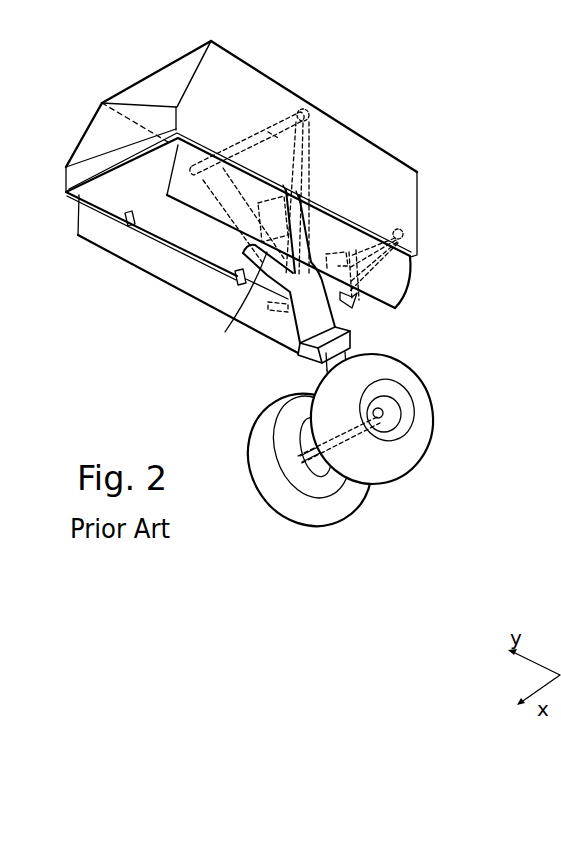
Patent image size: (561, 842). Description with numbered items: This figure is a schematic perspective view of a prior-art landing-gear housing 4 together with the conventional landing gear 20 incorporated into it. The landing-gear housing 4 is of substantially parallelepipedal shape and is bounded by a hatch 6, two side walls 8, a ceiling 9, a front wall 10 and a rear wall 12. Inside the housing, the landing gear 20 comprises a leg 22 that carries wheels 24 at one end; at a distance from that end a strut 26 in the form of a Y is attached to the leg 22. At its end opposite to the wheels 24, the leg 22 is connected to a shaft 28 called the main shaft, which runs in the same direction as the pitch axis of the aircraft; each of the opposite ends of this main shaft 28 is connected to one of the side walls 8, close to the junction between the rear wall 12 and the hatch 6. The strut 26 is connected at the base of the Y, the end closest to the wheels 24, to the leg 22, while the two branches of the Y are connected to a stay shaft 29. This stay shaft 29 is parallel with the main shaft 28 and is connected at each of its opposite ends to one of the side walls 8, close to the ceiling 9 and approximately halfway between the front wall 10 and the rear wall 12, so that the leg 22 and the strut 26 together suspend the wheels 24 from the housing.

The landing-gear housing 4 is at (380, 113).
The hatch 6 is at (138, 250).
The side walls 8 is at (407, 182).
The ceiling 9 is at (296, 85).
The front wall 10 is at (99, 129).
The rear wall 12 is at (422, 264).
The landing gear 20 is at (363, 438).
The leg 22 is at (330, 364).
The wheels 24 is at (387, 472).
The strut 26 is at (262, 330).
The main shaft 28 is at (402, 236).
The stay shaft 29 is at (249, 151).